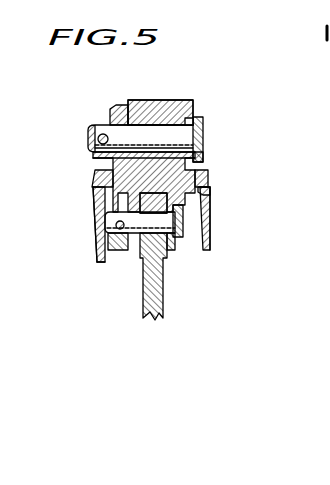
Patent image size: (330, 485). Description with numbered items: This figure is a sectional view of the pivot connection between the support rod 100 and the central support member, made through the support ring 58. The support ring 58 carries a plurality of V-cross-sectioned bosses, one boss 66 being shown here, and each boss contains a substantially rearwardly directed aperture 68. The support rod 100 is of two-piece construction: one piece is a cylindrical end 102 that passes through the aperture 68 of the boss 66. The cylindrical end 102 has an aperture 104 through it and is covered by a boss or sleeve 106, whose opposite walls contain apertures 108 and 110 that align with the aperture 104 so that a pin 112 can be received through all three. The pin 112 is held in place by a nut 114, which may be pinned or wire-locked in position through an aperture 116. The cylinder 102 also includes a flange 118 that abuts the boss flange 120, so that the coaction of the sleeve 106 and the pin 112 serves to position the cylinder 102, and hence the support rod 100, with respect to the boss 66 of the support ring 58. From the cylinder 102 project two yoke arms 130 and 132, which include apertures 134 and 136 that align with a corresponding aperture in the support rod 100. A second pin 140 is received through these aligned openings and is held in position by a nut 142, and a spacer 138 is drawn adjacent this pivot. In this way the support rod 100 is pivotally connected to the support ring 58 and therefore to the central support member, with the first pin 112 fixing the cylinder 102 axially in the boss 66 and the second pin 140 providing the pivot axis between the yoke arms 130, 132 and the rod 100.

The support ring 58 is at (218, 244).
The boss 66 is at (211, 193).
The aperture 68 is at (92, 171).
The support rod 100 is at (150, 302).
The cylindrical end 102 is at (174, 107).
The aperture 104 is at (157, 113).
The boss 106 is at (200, 156).
The aperture 108 is at (196, 117).
The aperture 110 is at (127, 123).
The pin 112 is at (201, 135).
The nut 114 is at (100, 121).
The aperture 116 is at (97, 139).
The flange 118 is at (180, 200).
The boss flange 120 is at (210, 180).
The yoke arm 130 is at (206, 220).
The yoke arm 132 is at (93, 208).
The aperture 134 is at (188, 232).
The aperture 136 is at (124, 241).
The spacer 138 is at (163, 250).
The pin 140 is at (98, 228).
The nut 142 is at (103, 251).